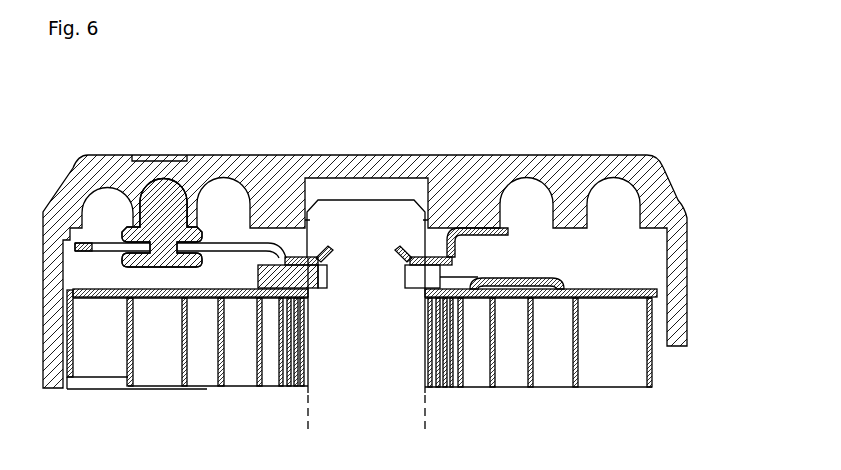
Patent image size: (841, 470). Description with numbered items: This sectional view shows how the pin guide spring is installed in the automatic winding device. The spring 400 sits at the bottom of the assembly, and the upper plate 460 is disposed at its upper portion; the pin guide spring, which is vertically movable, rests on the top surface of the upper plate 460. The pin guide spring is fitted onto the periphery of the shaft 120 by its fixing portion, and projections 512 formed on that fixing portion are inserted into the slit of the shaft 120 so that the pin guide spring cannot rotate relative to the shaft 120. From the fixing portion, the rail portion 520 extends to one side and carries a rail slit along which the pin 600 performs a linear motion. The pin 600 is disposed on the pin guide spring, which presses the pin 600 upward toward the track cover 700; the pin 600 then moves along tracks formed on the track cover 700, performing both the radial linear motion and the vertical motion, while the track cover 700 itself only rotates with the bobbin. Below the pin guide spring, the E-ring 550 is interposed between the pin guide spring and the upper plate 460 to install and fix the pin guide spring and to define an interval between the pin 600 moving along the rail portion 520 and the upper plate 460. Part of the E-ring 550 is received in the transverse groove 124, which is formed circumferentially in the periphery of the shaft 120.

The shaft 120 is at (369, 207).
The transverse groove 124 is at (323, 277).
The spring 400 is at (652, 368).
The upper plate 460 is at (647, 280).
The projections 512 is at (328, 247).
The rail portion 520 is at (97, 243).
The E-ring 550 is at (258, 280).
The pin 600 is at (145, 190).
The track cover 700 is at (682, 255).